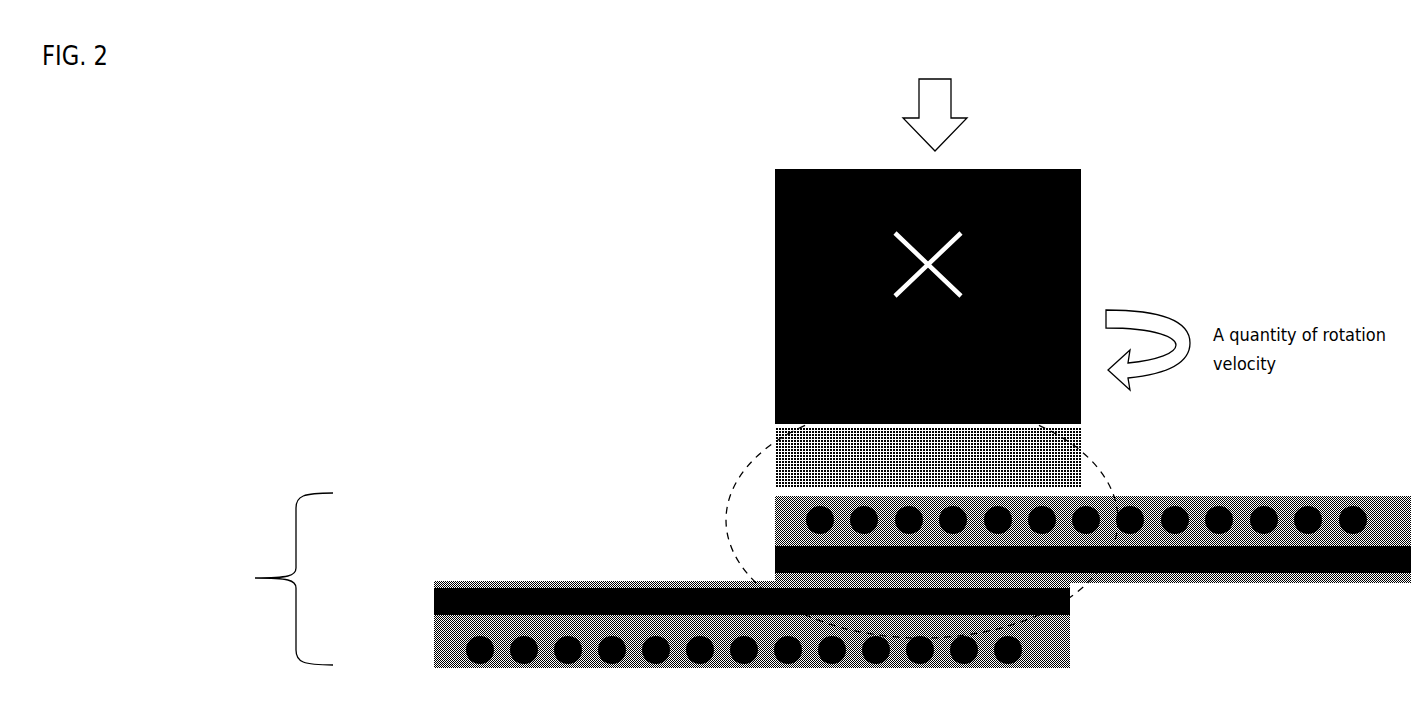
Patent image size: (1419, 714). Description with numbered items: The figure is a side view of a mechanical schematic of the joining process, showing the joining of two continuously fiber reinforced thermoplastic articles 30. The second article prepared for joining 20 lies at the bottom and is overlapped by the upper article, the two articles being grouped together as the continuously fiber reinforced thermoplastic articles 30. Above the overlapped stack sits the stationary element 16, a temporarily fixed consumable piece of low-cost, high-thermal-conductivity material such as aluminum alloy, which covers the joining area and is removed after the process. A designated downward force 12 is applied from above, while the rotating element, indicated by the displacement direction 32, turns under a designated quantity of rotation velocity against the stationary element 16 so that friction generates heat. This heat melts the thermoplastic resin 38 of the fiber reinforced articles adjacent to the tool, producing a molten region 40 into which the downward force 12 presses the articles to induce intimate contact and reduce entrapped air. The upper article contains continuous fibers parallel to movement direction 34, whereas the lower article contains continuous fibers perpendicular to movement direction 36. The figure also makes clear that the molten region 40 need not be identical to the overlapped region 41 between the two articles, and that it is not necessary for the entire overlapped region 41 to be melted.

The downward force 12 is at (1084, 115).
The stationary element 16 is at (928, 458).
The second article prepared for joining 20 is at (752, 624).
The continuously fiber reinforced thermoplastic articles 30 is at (271, 579).
The displacement direction 32 is at (1101, 264).
The continuous fibers parallel to movement direction 34 is at (1248, 442).
The continuous fibers perpendicular to movement direction 36 is at (615, 573).
The thermoplastic resin 38 is at (767, 487).
The molten region 40 is at (1089, 595).
The overlapped region 41 is at (765, 542).